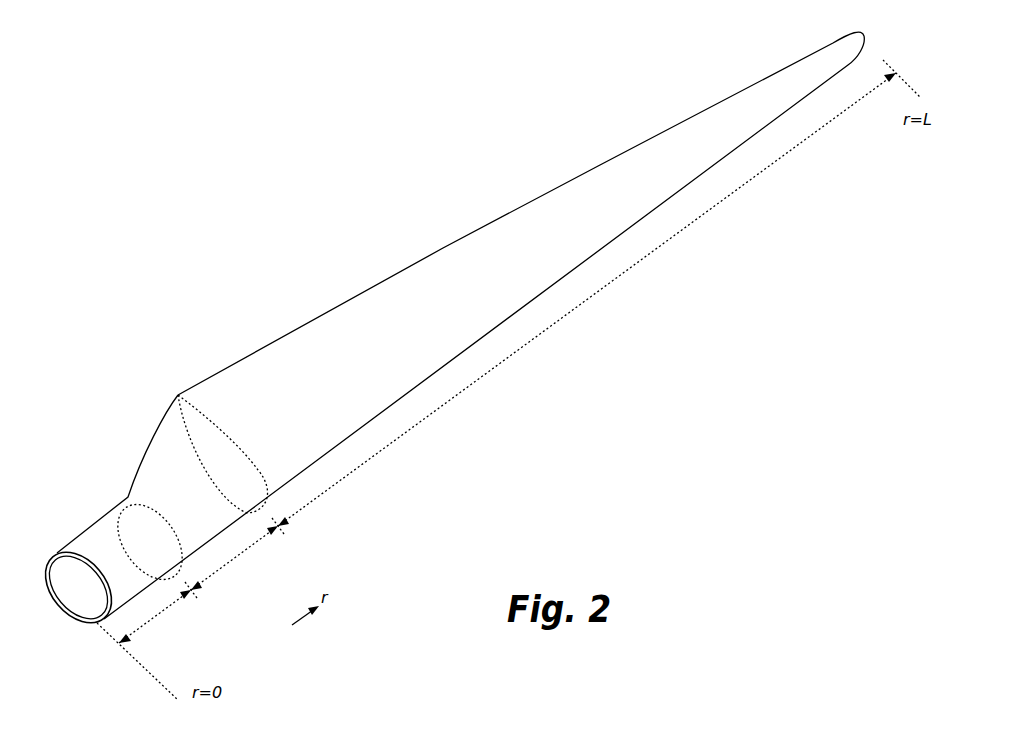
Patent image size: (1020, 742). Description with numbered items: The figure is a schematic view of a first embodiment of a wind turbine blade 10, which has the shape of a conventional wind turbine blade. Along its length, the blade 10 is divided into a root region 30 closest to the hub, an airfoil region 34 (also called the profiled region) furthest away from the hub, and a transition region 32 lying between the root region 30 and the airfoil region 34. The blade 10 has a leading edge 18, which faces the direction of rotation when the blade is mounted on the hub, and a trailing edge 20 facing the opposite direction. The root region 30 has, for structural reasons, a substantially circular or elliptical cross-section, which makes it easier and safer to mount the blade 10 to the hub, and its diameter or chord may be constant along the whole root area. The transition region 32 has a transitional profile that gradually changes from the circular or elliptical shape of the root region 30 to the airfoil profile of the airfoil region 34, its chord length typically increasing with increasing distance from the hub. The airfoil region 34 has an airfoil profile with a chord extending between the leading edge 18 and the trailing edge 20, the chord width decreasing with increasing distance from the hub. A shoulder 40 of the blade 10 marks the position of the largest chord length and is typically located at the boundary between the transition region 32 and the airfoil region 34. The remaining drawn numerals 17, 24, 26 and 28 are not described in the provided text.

The wind turbine blade 10 is at (460, 325).
The hollow root 17 is at (67, 577).
The leading edge 18 is at (617, 241).
The trailing edge 20 is at (505, 212).
The root section 24 is at (81, 545).
The root end face 26 is at (78, 623).
The blade wall 28 is at (61, 552).
The root region 30 is at (157, 614).
The transition region 32 is at (240, 552).
The airfoil region 34 is at (527, 343).
The shoulder 40 is at (178, 395).